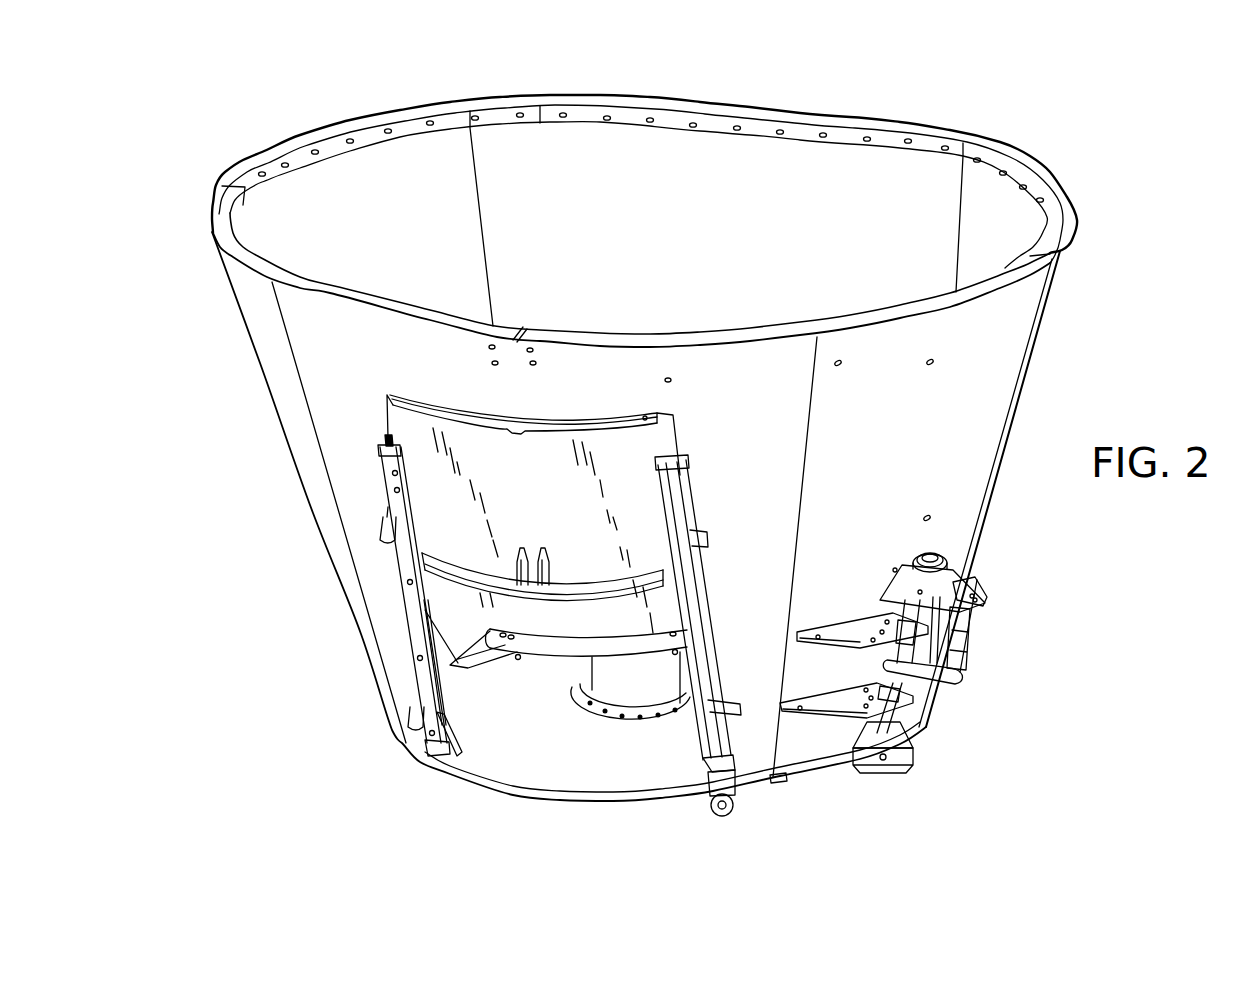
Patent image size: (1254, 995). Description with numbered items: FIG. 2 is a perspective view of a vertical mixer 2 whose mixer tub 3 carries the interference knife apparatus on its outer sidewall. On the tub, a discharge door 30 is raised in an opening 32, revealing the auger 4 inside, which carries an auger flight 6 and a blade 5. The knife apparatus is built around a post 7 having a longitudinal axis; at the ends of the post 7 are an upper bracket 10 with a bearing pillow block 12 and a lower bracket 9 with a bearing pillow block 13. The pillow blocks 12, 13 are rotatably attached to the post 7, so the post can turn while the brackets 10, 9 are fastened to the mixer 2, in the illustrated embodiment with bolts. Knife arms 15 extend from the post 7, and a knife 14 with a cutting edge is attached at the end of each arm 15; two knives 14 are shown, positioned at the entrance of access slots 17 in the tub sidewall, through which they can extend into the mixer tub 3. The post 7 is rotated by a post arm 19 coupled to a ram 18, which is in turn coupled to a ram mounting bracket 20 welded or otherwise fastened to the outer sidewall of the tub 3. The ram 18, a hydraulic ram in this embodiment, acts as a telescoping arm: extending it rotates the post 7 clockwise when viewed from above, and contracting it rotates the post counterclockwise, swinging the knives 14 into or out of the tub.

The mixing tank 2 is at (327, 122).
The mixer tub 3 is at (263, 224).
The auger 4 is at (621, 680).
The blade 5 is at (491, 648).
The auger flight 6 is at (565, 637).
The post 7 is at (908, 733).
The lower bracket 9 is at (873, 733).
The upper bracket 10 is at (886, 585).
The bearing pillow block 12 is at (933, 560).
The bearing pillow block 13 is at (893, 775).
The knife 14 is at (853, 630).
The knife arm 15 is at (900, 630).
The access slot 17 is at (851, 693).
The ram 18 is at (982, 625).
The post arm 19 is at (962, 682).
The ram mounting bracket 20 is at (987, 598).
The discharge door 30 is at (390, 440).
The opening 32 is at (435, 757).